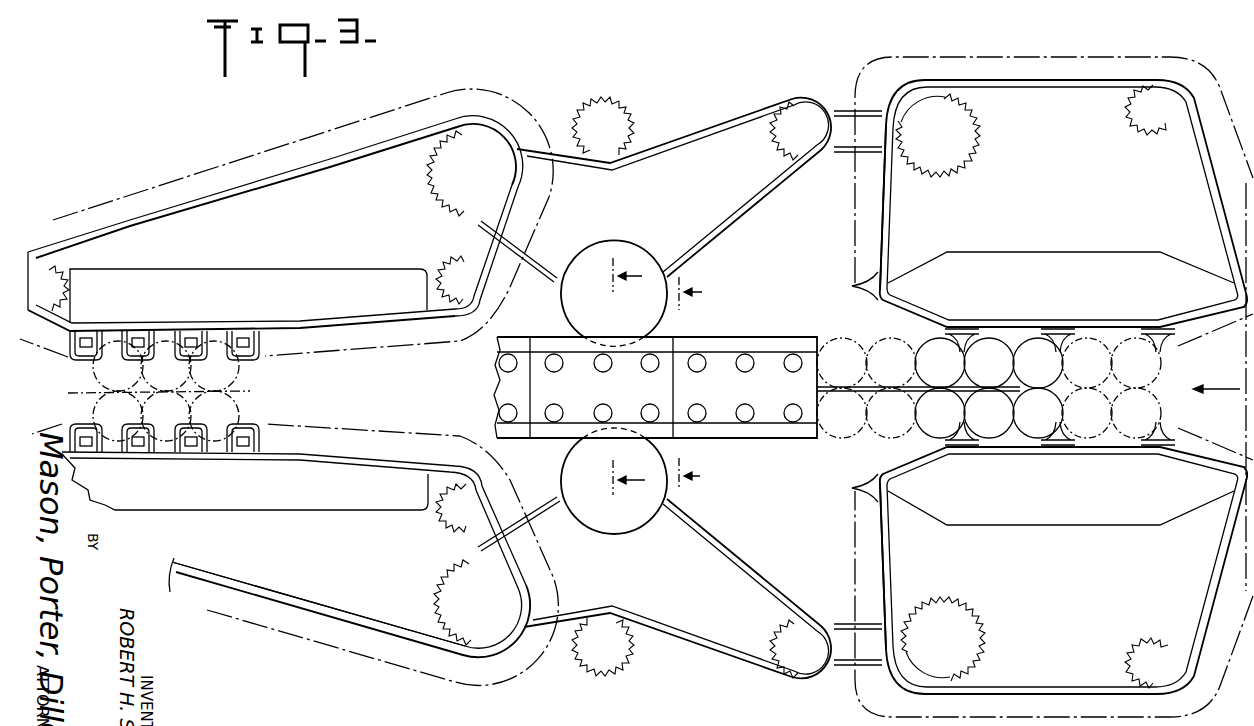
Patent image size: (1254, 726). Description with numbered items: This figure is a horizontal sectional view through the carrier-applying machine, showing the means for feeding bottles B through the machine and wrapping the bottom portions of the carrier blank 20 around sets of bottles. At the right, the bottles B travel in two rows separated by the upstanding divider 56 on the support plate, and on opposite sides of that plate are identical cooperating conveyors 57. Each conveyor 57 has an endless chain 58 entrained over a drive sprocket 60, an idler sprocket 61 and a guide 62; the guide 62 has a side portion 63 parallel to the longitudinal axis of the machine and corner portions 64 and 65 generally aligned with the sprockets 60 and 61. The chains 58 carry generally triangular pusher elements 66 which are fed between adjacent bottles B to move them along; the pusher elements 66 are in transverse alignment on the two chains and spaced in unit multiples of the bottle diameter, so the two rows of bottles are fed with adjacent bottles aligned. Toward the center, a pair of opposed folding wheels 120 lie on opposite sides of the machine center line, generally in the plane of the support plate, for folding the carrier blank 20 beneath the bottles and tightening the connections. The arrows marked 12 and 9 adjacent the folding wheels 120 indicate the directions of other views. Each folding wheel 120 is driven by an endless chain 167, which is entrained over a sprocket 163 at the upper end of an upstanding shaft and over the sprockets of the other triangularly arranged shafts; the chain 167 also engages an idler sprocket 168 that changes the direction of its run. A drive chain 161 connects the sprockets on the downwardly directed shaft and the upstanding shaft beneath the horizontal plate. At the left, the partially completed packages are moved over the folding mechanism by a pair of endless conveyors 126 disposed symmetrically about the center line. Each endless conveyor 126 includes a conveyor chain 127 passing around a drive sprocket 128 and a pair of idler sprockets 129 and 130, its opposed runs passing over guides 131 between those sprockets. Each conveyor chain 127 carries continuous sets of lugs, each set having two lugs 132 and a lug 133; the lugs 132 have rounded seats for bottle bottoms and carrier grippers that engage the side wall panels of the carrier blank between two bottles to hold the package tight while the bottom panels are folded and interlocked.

The view direction indicator 9 is at (701, 384).
The view direction indicator 12 is at (612, 376).
The carrier blank 20 is at (548, 335).
The upstanding divider 56 is at (872, 388).
The conveyor 57 is at (886, 251).
The endless chain 58 is at (877, 230).
The drive sprocket 60 is at (978, 138).
The idler sprocket 61 is at (1130, 127).
The guide 62 is at (1038, 257).
The side portion 63 is at (1128, 307).
The corner portion 64 is at (885, 480).
The corner portion 65 is at (1237, 487).
The pusher element 66 is at (857, 292).
The folding wheel 120 is at (631, 231).
The endless conveyor 126 is at (207, 325).
The conveyor chain 127 is at (232, 202).
The drive sprocket 128 is at (443, 184).
The idler sprocket 129 is at (48, 289).
The idler sprocket 130 is at (446, 273).
The guide 131 is at (190, 505).
The lug 132 is at (188, 448).
The lug 133 is at (80, 424).
The drive chain 161 is at (838, 112).
The sprocket 163 is at (780, 140).
The endless chain 167 is at (737, 219).
The idler sprocket 168 is at (610, 107).
The bottle B is at (155, 386).